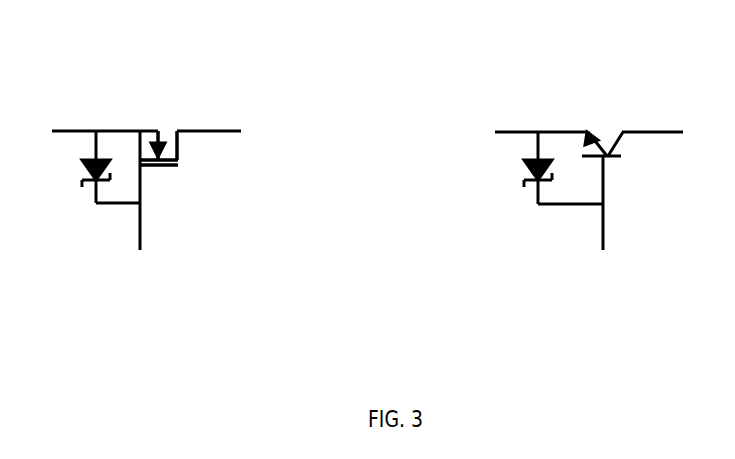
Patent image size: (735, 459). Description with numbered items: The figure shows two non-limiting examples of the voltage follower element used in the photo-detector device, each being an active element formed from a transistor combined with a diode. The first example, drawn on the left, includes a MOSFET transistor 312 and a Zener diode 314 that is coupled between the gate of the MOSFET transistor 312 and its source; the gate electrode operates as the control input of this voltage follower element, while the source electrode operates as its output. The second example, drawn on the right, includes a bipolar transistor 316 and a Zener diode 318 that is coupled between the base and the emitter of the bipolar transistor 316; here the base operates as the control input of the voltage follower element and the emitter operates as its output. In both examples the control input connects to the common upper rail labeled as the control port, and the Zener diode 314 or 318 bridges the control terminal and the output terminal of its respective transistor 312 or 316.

The MOSFET transistor 312 is at (140, 131).
The Zener diode 314 is at (83, 185).
The bipolar transistor 316 is at (597, 152).
The Zener diode 318 is at (523, 182).